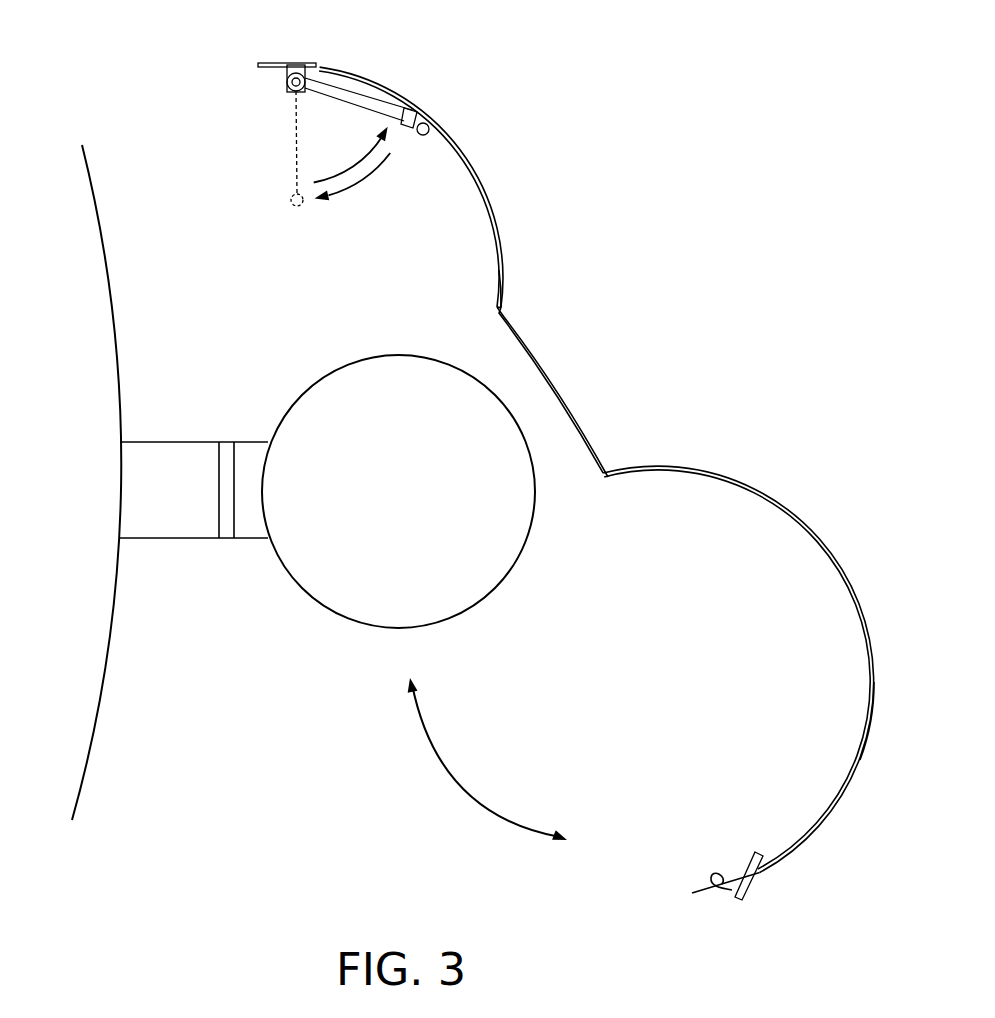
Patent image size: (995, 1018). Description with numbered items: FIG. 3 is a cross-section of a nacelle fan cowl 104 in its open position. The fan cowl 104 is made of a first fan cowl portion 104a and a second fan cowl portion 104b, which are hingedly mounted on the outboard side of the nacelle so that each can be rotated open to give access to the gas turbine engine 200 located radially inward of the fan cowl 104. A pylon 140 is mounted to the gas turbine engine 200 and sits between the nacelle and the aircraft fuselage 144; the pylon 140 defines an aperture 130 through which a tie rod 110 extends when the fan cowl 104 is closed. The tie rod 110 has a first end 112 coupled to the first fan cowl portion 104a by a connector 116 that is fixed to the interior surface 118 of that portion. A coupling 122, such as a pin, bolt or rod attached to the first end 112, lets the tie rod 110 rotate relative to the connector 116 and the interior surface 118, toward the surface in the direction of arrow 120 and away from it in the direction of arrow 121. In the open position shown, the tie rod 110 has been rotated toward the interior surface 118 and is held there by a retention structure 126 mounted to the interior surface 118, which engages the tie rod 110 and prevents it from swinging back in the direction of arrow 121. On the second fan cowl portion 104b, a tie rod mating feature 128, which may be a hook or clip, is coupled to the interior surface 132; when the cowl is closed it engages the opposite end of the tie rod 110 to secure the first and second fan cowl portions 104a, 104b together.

The fan cowl 104 is at (600, 501).
The first fan cowl portion 104a is at (484, 182).
The second fan cowl portion 104b is at (815, 533).
The tie rod 110 is at (352, 97).
The first end 112 is at (318, 67).
The connector 116 is at (291, 66).
The interior surface 118 is at (496, 231).
The arrow 120 is at (323, 176).
The arrow 121 is at (371, 184).
The coupling 122 is at (288, 86).
The retention structure 126 is at (425, 113).
The tie rod mating feature 128 is at (738, 898).
The aperture 130 is at (228, 428).
The interior surface 132 is at (865, 742).
The pylon 140 is at (197, 502).
The aircraft fuselage 144 is at (63, 482).
The gas turbine engine 200 is at (410, 505).